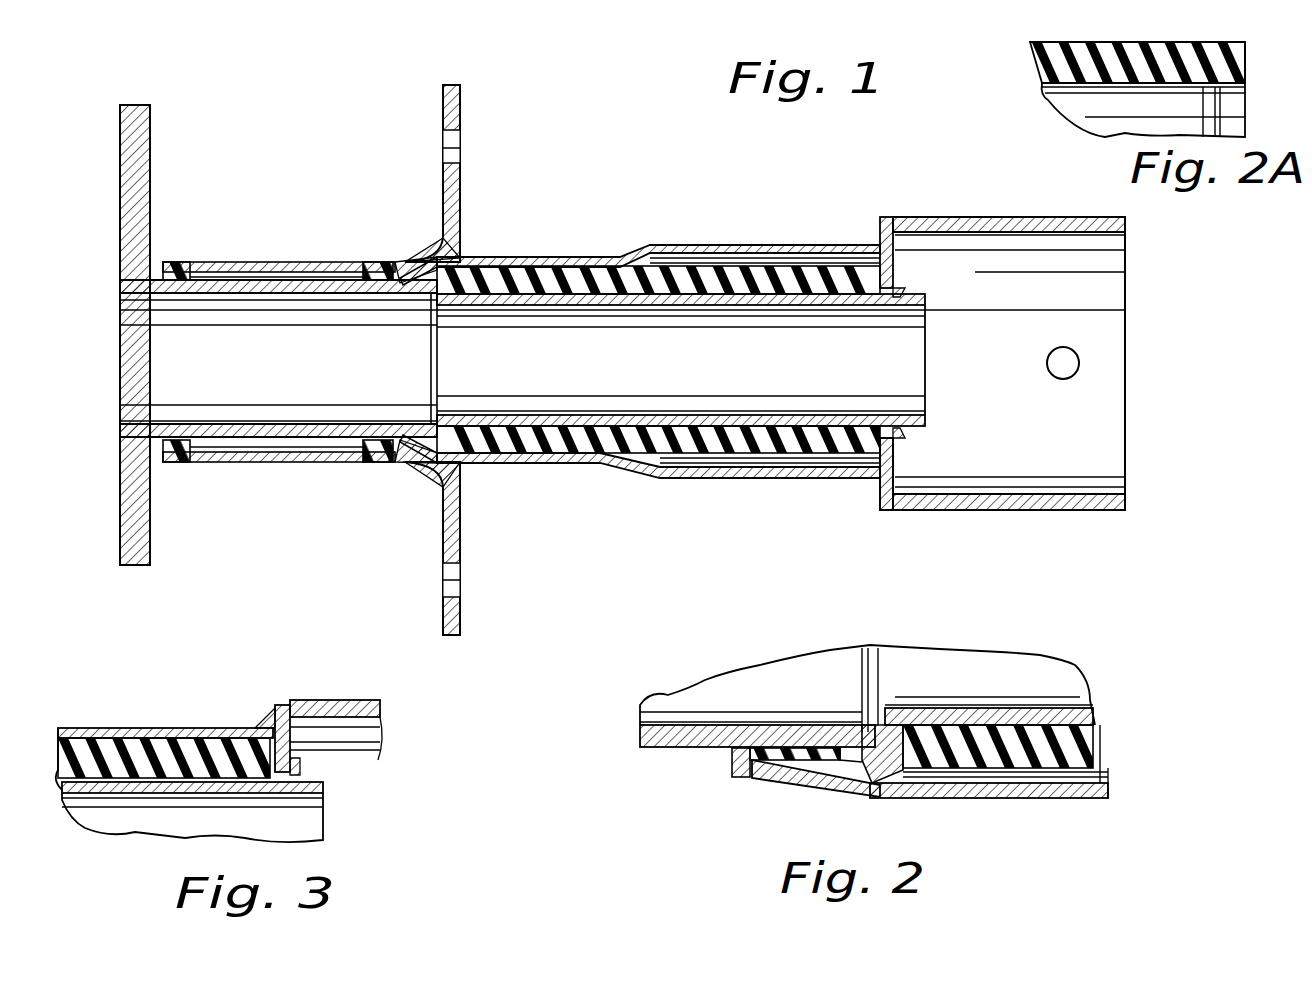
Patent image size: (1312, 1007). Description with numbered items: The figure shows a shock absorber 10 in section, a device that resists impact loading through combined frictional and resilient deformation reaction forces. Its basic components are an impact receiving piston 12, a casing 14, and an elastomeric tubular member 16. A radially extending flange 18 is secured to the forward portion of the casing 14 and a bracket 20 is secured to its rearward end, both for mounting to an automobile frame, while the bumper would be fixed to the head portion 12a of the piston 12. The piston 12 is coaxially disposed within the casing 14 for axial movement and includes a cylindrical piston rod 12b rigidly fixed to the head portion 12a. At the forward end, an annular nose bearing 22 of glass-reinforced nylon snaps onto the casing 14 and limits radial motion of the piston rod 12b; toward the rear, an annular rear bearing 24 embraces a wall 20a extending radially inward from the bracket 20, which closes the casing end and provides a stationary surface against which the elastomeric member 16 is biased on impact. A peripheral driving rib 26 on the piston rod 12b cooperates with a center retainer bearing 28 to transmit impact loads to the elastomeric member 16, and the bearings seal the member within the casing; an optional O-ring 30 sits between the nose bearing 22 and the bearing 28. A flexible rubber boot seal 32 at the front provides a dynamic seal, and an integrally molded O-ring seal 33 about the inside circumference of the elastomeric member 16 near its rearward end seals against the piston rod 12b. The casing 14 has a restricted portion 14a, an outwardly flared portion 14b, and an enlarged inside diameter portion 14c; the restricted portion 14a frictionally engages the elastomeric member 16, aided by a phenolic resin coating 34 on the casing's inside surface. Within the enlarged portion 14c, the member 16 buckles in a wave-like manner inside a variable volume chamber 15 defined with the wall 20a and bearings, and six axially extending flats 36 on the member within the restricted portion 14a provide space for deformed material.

In FIG. 1, the shock absorber 10 is at (728, 188).
In FIG. 1, the piston 12 is at (241, 335).
In FIG. 1, the piston head portion 12a is at (150, 520).
In FIG. 1, the piston rod 12b is at (228, 293).
In FIG. 3, the piston rod 12b is at (228, 788).
In FIG. 2, the piston rod 12b is at (1070, 712).
In FIG. 1, the casing 14 is at (662, 353).
In FIG. 1, the restricted diameter portion of casing 14a is at (553, 257).
In FIG. 2, the restricted diameter portion of casing 14a is at (1033, 798).
In FIG. 1, the outwardly flared portion of casing 14b is at (636, 250).
In FIG. 1, the enlarged inside diameter portion of casing 14c is at (822, 246).
In FIG. 3, the enlarged inside diameter portion of casing 14c is at (93, 728).
In FIG. 1, the variable volume chamber 15 is at (708, 258).
In FIG. 1, the elastomeric tubular member 16 is at (663, 450).
In FIG. 2A, the elastomeric tubular member 16 is at (1140, 48).
In FIG. 3, the elastomeric tubular member 16 is at (150, 755).
In FIG. 2, the elastomeric tubular member 16 is at (1108, 728).
In FIG. 1, the radially extending flange 18 is at (462, 95).
In FIG. 1, the bracket 20 is at (1031, 363).
In FIG. 3, the bracket 20 is at (334, 717).
In FIG. 1, the wall 20a is at (895, 455).
In FIG. 3, the wall 20a is at (278, 705).
In FIG. 1, the nose bearing 22 is at (362, 292).
In FIG. 2, the nose bearing 22 is at (732, 762).
In FIG. 1, the rear bearing 24 is at (905, 290).
In FIG. 3, the rear bearing 24 is at (298, 770).
In FIG. 1, the driving rib 26 is at (425, 300).
In FIG. 2, the driving rib 26 is at (865, 738).
In FIG. 1, the center retainer bearing 28 is at (458, 262).
In FIG. 2, the center retainer bearing 28 is at (895, 735).
In FIG. 2, the O-ring 30 is at (838, 770).
In FIG. 1, the flexible rubber boot seal 32 is at (277, 258).
In FIG. 2A, the integrally molded O-ring seal 33 is at (1222, 95).
In FIG. 1, the phenolic resin coating 34 is at (764, 468).
In FIG. 2, the phenolic resin coating 34 is at (1100, 775).
In FIG. 1, the axially extending flats 36 is at (535, 453).
In FIG. 2, the axially extending flats 36 is at (985, 777).